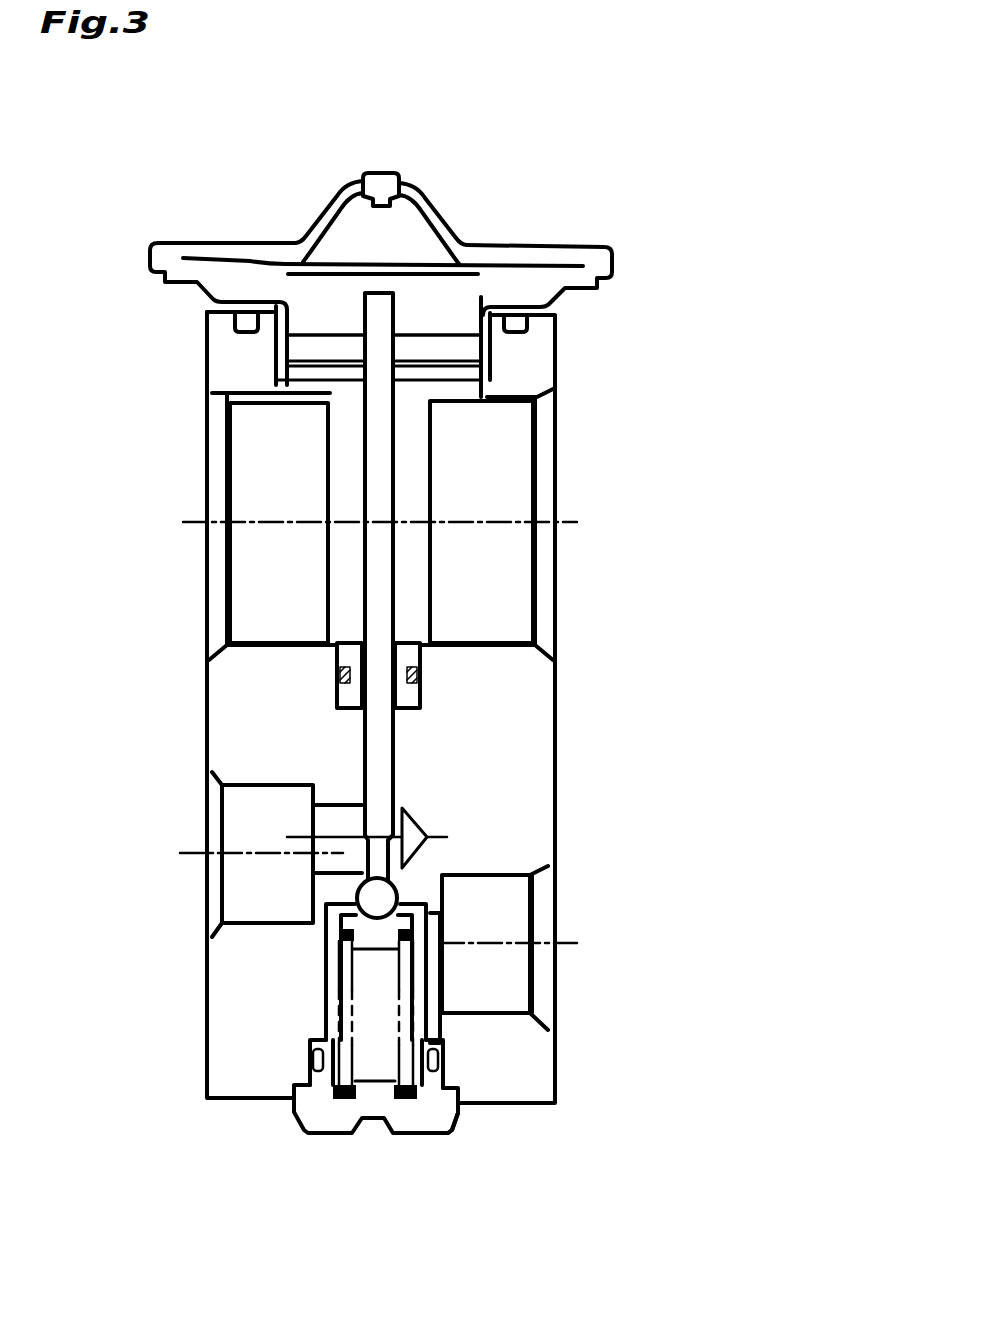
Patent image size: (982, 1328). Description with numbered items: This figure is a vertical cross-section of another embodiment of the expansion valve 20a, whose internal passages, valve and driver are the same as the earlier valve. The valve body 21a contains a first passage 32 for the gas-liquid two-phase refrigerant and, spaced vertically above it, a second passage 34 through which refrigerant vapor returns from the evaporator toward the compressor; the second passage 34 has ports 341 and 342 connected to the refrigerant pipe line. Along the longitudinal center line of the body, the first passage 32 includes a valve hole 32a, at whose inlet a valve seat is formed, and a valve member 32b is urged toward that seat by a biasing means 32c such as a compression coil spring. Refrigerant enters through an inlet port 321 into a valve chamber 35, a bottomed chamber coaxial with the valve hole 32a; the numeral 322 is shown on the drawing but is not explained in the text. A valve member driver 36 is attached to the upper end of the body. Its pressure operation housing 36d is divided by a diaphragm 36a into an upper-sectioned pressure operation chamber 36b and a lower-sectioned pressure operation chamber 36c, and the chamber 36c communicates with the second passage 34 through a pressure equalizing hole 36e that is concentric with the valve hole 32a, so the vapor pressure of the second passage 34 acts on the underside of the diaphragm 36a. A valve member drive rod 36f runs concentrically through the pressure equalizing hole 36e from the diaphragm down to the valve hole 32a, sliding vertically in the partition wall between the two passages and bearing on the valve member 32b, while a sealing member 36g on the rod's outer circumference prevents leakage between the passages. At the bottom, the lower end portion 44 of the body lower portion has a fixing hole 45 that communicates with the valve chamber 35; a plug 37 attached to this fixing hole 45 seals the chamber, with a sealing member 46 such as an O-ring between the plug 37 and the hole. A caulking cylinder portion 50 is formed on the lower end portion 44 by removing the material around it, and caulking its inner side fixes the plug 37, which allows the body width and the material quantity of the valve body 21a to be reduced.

The expansion valve 20a is at (727, 253).
The valve body 21a is at (547, 365).
The first passage 32 is at (260, 790).
The valve hole 32a is at (337, 918).
The valve member 32b is at (385, 890).
The biasing means 32c is at (337, 957).
The second passage 34 is at (480, 640).
The valve chamber 35 is at (368, 1012).
The valve member driver 36 is at (455, 215).
The diaphragm 36a is at (548, 265).
The upper-sectioned pressure operation chamber 36b is at (418, 235).
The lower-sectioned pressure operation chamber 36c is at (312, 345).
The pressure operation housing 36d is at (218, 250).
The pressure equalizing hole 36e is at (345, 404).
The valve member drive rod 36f is at (380, 441).
The sealing member 36g is at (345, 684).
The plug 37 is at (327, 1120).
The lower end portion 44 is at (530, 1075).
The fixing hole 45 is at (438, 1082).
The sealing member 46 is at (435, 1063).
The caulking cylinder portion 50 is at (460, 1125).
The inlet port 321 is at (555, 1012).
The chamfer 322 is at (210, 925).
The port 341 is at (560, 645).
The port 342 is at (218, 640).